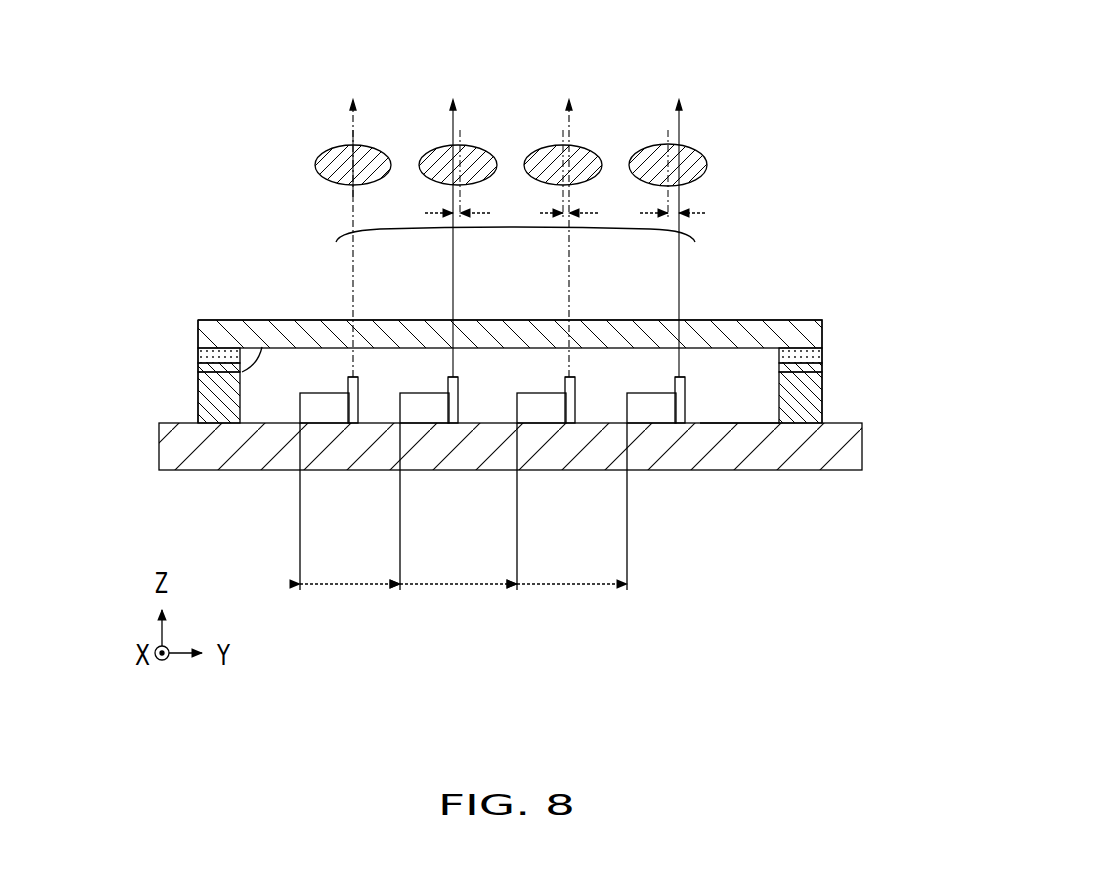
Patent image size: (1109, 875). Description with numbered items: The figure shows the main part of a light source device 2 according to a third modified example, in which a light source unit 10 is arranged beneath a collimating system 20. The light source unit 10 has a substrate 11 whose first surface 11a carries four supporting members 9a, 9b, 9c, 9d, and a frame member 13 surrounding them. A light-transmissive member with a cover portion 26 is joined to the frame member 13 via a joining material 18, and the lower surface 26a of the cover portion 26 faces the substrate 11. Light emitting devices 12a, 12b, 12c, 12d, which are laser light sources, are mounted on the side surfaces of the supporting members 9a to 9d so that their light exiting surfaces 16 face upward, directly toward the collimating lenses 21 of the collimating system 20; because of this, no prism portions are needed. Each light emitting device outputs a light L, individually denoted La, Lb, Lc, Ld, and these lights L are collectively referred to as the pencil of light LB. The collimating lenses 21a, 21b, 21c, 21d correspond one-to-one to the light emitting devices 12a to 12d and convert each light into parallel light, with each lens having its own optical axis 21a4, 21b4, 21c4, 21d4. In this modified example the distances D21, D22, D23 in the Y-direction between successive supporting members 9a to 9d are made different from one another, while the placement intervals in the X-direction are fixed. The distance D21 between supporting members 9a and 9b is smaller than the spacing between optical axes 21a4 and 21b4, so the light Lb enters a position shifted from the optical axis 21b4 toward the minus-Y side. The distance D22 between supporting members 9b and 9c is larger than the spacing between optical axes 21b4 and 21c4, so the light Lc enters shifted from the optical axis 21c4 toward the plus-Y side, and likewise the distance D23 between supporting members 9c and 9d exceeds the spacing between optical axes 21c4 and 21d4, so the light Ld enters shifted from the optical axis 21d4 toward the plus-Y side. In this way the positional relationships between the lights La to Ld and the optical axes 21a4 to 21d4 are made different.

The light source device 2 is at (868, 102).
The light source unit 10 is at (188, 274).
The substrate 11 is at (813, 458).
The first surface 11a is at (745, 424).
The frame member 13 is at (198, 410).
The light exiting surface 16 is at (678, 378).
The joining material 18 is at (198, 355).
The collimating system 20 is at (549, 129).
The collimating lens 21 is at (487, 129).
The collimating lens 21a is at (330, 150).
The collimating lens 21b is at (435, 150).
The collimating lens 21c is at (540, 150).
The collimating lens 21d is at (645, 150).
The optical axis 21a4 is at (357, 133).
The optical axis 21b4 is at (462, 133).
The optical axis 21c4 is at (553, 143).
The optical axis 21d4 is at (658, 140).
The cover portion 26 is at (726, 336).
The lower surface 26a is at (198, 370).
The supporting member 9a is at (315, 417).
The supporting member 9b is at (415, 417).
The supporting member 9c is at (532, 417).
The supporting member 9d is at (642, 417).
The light emitting device 12a is at (353, 428).
The light emitting device 12b is at (453, 428).
The light emitting device 12c is at (570, 428).
The light emitting device 12d is at (680, 428).
The light La is at (352, 272).
The light Lb is at (452, 272).
The light Lc is at (568, 272).
The light Ld is at (678, 272).
The light L is at (465, 299).
The pencil of light LB is at (338, 236).
The distance D21 is at (350, 567).
The distance D22 is at (458, 567).
The distance D23 is at (572, 567).